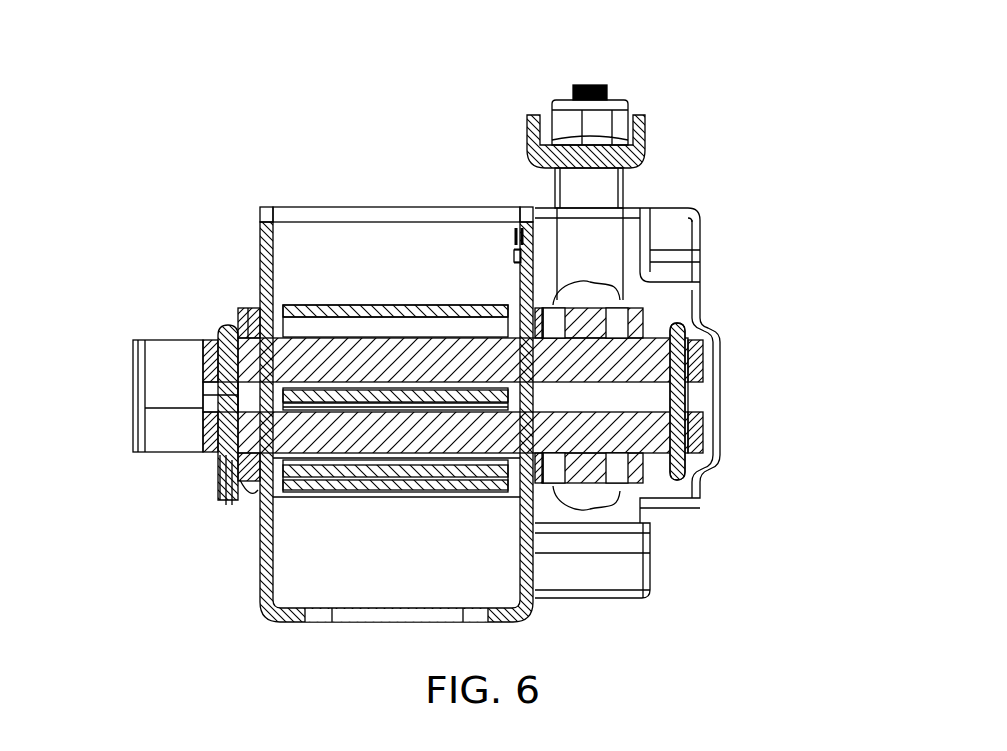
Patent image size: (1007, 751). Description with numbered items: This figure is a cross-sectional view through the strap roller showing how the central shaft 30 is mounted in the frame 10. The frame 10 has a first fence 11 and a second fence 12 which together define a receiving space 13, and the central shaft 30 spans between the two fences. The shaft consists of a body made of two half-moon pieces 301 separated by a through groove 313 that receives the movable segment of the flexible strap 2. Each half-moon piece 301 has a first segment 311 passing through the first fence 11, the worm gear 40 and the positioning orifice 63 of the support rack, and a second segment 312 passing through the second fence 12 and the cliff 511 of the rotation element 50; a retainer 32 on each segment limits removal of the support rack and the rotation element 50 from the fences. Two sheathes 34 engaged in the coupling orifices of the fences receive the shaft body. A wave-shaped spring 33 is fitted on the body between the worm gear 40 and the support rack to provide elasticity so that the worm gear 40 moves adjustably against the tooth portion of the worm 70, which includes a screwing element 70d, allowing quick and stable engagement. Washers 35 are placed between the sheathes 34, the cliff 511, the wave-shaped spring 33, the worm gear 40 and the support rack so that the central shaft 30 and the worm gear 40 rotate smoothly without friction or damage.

The frame 10 is at (258, 583).
The first fence 11 is at (530, 568).
The second fence 12 is at (262, 250).
The receiving space 13 is at (363, 570).
The flexible strap 2 is at (430, 305).
The central shaft 30 is at (470, 325).
The half-moon piece 301 is at (350, 355).
The retainer 32 is at (235, 327).
The second segment 312 is at (210, 365).
The through groove 313 is at (240, 395).
The rotation element 50 is at (130, 437).
The cliff 511 is at (250, 312).
The washer 35 is at (245, 312).
The worm gear 40 is at (700, 275).
The wave-shaped spring 33 is at (672, 478).
The sheath 34 is at (253, 508).
The positioning orifice 63 is at (665, 350).
The first segment 311 is at (700, 350).
The worm 70 is at (596, 72).
The screwing element 70d is at (615, 133).